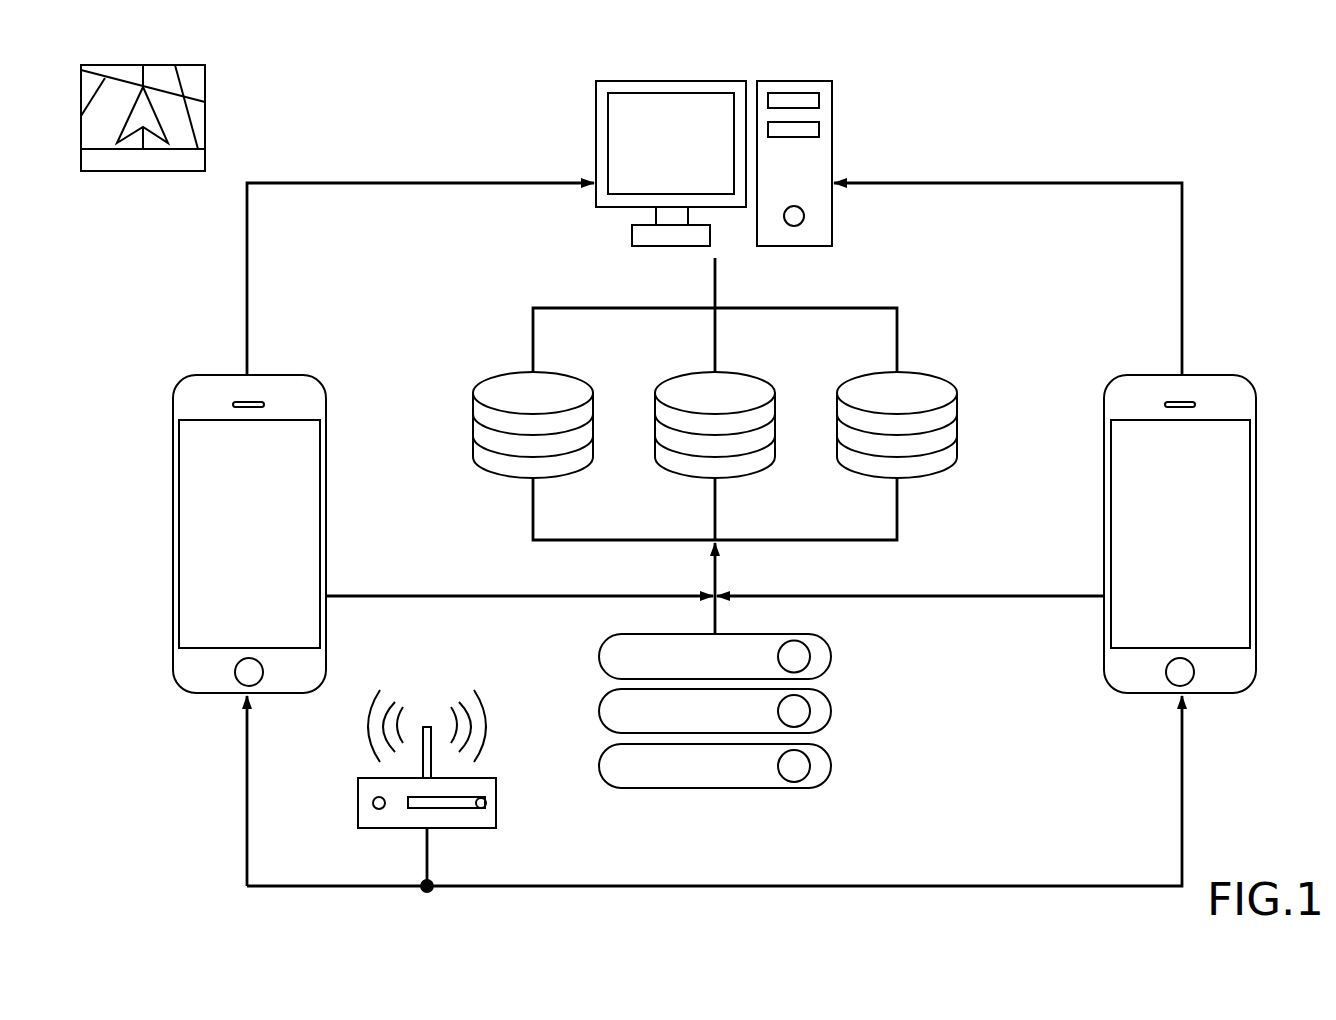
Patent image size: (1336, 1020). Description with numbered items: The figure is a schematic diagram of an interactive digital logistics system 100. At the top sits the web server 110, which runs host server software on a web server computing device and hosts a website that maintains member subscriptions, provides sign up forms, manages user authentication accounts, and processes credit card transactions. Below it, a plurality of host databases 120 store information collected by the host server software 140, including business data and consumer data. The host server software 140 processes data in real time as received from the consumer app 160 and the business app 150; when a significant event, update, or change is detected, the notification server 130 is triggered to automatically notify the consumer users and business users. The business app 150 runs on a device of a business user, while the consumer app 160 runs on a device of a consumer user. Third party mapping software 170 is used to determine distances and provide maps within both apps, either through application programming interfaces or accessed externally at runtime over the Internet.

The interactive digital logistics system 100 is at (1122, 87).
The web server 110 is at (769, 67).
The host databases 120 is at (553, 380).
The notification server 130 is at (427, 698).
The host server software 140 is at (779, 806).
The business software application 150 is at (1142, 490).
The consumer software application 160 is at (212, 490).
The third party mapping software 170 is at (217, 102).